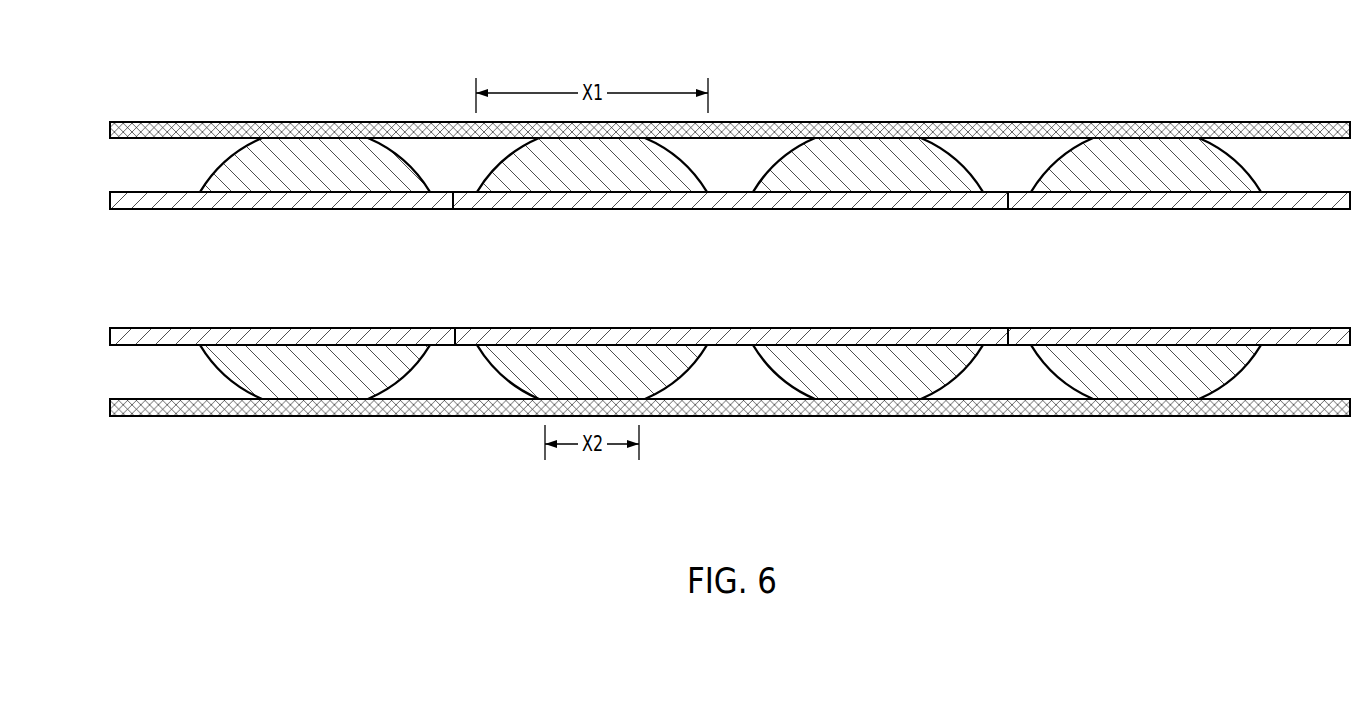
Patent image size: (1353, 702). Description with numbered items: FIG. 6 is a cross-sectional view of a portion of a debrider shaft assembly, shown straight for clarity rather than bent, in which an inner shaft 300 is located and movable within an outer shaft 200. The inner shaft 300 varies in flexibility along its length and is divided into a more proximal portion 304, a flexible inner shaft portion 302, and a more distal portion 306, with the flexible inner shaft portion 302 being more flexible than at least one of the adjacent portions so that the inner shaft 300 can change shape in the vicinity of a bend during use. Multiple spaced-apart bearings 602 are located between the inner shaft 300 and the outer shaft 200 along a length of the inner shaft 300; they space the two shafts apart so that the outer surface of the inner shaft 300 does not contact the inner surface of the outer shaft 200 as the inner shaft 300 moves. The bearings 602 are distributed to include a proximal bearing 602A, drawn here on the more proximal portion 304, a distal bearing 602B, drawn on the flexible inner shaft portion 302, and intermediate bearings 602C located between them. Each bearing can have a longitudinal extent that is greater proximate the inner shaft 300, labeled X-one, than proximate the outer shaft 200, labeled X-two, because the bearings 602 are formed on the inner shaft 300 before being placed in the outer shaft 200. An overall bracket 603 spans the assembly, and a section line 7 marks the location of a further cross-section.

The stacked assembly 603 is at (1352, 60).
The outer shaft 200 is at (172, 121).
The inner shaft 300 is at (101, 199).
The bearings 602 is at (101, 140).
The proximal bearing 602A is at (390, 172).
The distal bearing 602B is at (1222, 172).
The intermediate bearing 602C is at (668, 172).
The more proximal portion 304 is at (452, 472).
The flexible inner shaft portion 302 is at (1007, 472).
The more distal portion 306 is at (1352, 472).
The section line 7- 7 is at (1112, 450).